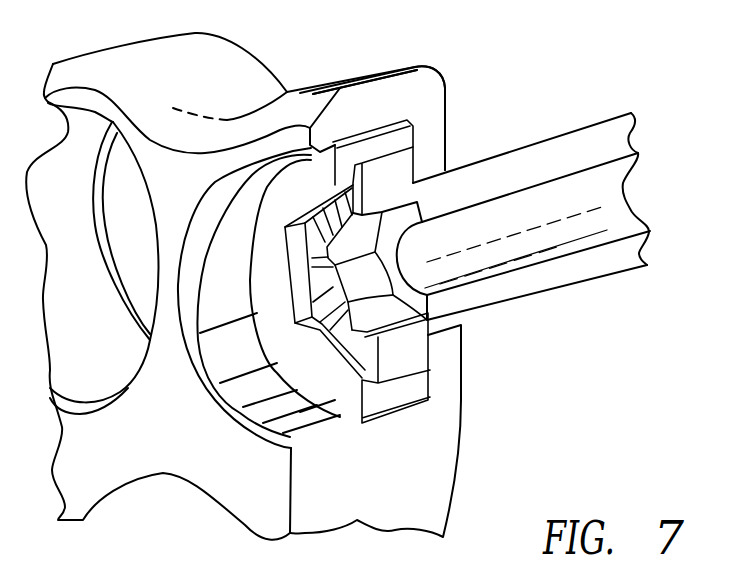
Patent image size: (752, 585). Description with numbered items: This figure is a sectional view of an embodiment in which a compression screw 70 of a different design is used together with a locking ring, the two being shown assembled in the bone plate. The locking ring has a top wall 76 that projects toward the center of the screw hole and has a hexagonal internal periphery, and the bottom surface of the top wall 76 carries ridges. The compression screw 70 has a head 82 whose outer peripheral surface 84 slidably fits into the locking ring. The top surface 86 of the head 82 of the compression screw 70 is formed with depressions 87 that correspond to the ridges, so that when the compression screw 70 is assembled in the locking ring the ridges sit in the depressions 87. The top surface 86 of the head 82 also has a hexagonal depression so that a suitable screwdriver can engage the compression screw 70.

The compression screw 70 is at (569, 143).
The top wall 76 is at (274, 292).
The head 82 is at (413, 165).
The outer peripheral surface 84 is at (403, 358).
The top surface 86 is at (352, 330).
The depressions 87 is at (395, 308).